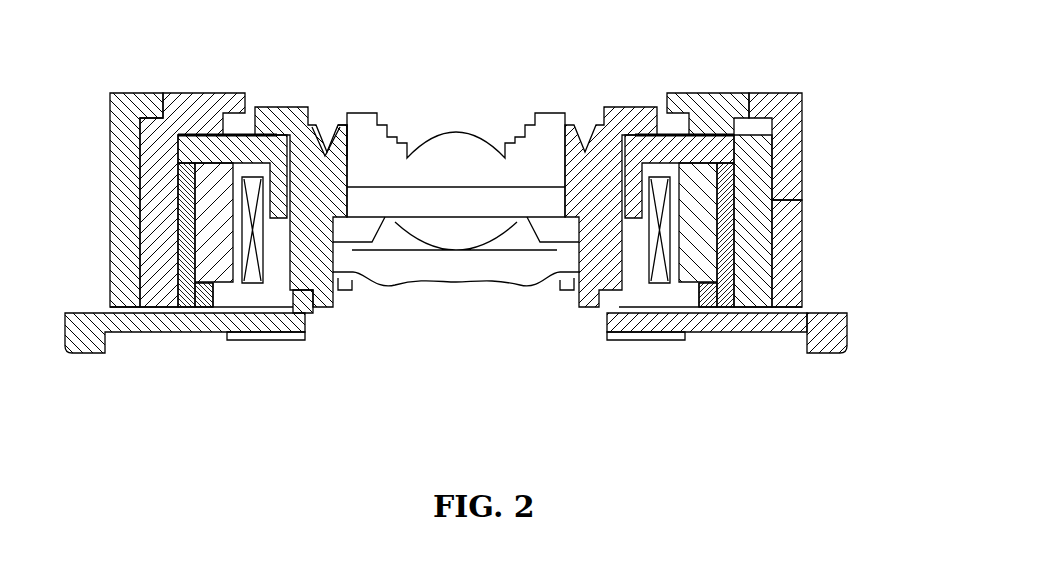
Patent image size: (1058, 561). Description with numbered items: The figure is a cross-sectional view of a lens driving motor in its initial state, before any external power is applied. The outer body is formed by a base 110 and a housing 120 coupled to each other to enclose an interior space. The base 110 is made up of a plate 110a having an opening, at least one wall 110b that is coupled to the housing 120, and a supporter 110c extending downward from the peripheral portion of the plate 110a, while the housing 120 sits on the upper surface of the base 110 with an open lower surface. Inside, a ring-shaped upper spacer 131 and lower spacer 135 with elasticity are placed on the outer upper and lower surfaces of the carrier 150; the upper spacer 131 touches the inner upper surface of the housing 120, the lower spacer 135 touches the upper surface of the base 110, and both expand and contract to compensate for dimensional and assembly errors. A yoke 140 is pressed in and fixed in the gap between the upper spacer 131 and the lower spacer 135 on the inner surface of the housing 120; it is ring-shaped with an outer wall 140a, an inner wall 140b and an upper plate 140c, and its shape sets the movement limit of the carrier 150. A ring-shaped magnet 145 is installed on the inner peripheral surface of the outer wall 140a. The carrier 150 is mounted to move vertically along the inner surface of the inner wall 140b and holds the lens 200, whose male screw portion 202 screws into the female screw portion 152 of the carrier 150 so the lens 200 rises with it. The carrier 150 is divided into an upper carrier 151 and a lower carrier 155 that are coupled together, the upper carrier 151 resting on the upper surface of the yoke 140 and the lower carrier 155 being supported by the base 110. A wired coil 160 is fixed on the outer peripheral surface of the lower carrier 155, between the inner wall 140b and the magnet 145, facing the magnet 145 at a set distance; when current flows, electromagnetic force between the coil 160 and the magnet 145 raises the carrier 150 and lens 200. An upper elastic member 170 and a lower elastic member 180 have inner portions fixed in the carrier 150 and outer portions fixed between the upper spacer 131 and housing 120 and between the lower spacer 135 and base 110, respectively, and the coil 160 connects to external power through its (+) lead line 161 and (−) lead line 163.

The base 110 is at (788, 214).
The plate 110a is at (766, 333).
The wall 110b is at (793, 297).
The supporter 110c is at (833, 353).
The housing 120 is at (725, 110).
The upper spacer 131 is at (706, 130).
The lower spacer 135 is at (723, 333).
The yoke 140 is at (154, 178).
The outer wall 140a is at (185, 222).
The inner wall 140b is at (232, 205).
The upper plate 140c is at (200, 150).
The magnet 145 is at (210, 262).
The carrier 150 is at (305, 313).
The upper carrier 151 is at (300, 287).
The female screw portion 152 is at (322, 157).
The lower carrier 155 is at (302, 340).
The coil 160 is at (736, 240).
The (+) lead line 161 is at (648, 333).
The (−) lead line 163 is at (670, 333).
The upper elastic member 170 is at (245, 128).
The lower elastic member 180 is at (225, 333).
The lens 200 is at (462, 152).
The male screw portion 202 is at (330, 160).